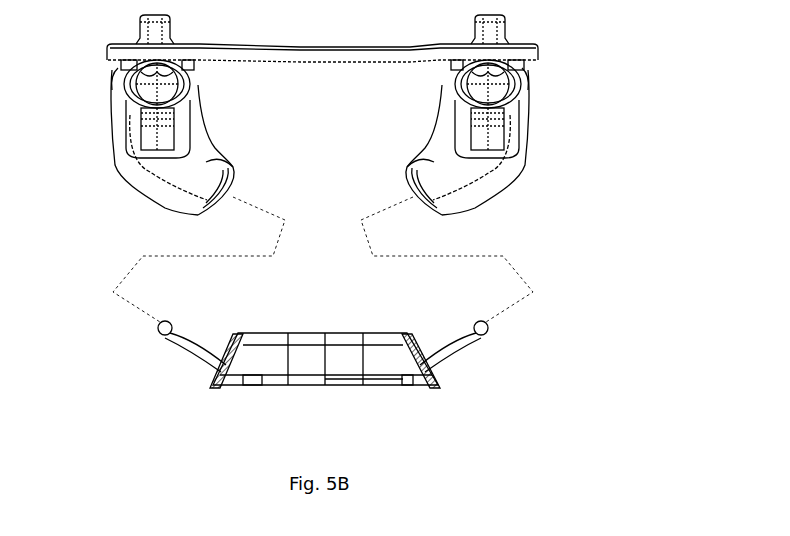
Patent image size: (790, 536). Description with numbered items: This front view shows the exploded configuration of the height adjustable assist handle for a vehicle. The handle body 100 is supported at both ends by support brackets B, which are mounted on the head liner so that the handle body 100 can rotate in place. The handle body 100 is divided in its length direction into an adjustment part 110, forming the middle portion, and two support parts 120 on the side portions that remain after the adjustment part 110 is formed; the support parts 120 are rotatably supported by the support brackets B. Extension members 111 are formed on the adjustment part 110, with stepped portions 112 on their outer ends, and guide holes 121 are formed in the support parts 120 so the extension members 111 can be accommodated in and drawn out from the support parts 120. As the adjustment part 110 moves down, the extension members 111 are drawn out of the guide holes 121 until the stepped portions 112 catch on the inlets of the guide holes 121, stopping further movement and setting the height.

The handle body 100 is at (599, 300).
The adjustment part 110 is at (305, 376).
The extension members 111 is at (196, 357).
The stepped portions 112 is at (170, 322).
The support parts 120 is at (146, 188).
The guide holes 121 is at (218, 158).
The support brackets B is at (118, 80).